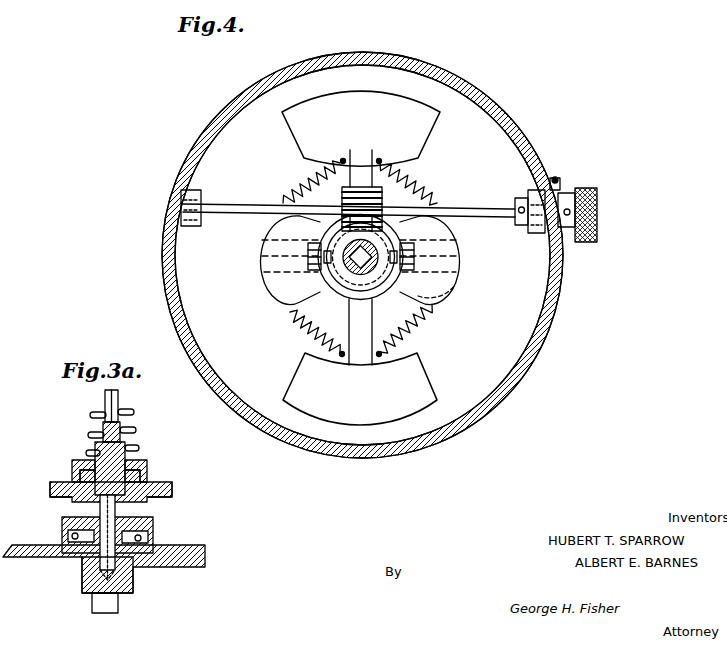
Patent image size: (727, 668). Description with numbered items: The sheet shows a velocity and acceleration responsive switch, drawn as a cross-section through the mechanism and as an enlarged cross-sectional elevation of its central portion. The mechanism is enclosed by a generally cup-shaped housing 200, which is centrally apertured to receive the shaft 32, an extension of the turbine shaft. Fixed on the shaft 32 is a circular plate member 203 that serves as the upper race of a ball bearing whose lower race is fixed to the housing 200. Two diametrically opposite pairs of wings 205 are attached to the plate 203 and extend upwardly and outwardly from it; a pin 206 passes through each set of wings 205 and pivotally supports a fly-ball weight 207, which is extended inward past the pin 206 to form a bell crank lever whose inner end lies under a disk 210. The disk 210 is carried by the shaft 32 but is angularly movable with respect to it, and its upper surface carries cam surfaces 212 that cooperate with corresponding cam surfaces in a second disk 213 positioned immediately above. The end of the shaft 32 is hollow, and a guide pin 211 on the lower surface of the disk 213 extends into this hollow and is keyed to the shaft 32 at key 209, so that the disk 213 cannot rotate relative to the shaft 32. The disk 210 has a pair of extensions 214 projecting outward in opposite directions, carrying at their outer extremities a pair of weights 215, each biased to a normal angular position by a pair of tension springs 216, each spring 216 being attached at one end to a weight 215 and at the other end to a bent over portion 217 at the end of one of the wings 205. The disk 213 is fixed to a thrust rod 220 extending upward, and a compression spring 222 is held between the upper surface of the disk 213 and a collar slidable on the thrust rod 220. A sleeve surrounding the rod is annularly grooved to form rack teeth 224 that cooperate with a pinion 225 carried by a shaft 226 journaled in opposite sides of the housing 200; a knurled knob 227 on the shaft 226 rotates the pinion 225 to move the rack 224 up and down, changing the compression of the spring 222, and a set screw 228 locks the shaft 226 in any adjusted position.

In FIG. 4, the housing 200 is at (545, 345).
In FIG. 3A, the housing 200 is at (185, 548).
In FIG. 4, the circular plate member 203 is at (403, 285).
In FIG. 3A, the circular plate member 203 is at (62, 520).
In FIG. 4, the wings 205 is at (455, 292).
In FIG. 4, the pin 206 is at (487, 238).
In FIG. 4, the fly-ball weight 207 is at (345, 262).
In FIG. 3A, the key 209 is at (95, 560).
In FIG. 3A, the disk 210 is at (147, 486).
In FIG. 3A, the guide pin 211 is at (112, 510).
In FIG. 3A, the cam surfaces 212 is at (140, 474).
In FIG. 4, the second disk 213 is at (326, 263).
In FIG. 3A, the second disk 213 is at (125, 465).
In FIG. 4, the extensions 214 is at (362, 156).
In FIG. 3A, the extensions 214 is at (50, 490).
In FIG. 4, the weights 215 is at (424, 128).
In FIG. 4, the tension springs 216 is at (330, 168).
In FIG. 4, the bent over portion 217 is at (262, 256).
In FIG. 4, the thrust rod 220 is at (370, 195).
In FIG. 3A, the thrust rod 220 is at (118, 398).
In FIG. 3A, the compression spring 222 is at (85, 432).
In FIG. 4, the rack teeth 224 is at (310, 270).
In FIG. 4, the pinion 225 is at (318, 200).
In FIG. 4, the shaft 226 is at (190, 226).
In FIG. 4, the knurled knob 227 is at (588, 242).
In FIG. 4, the set screw 228 is at (557, 178).
In FIG. 3A, the shaft 32 is at (118, 600).